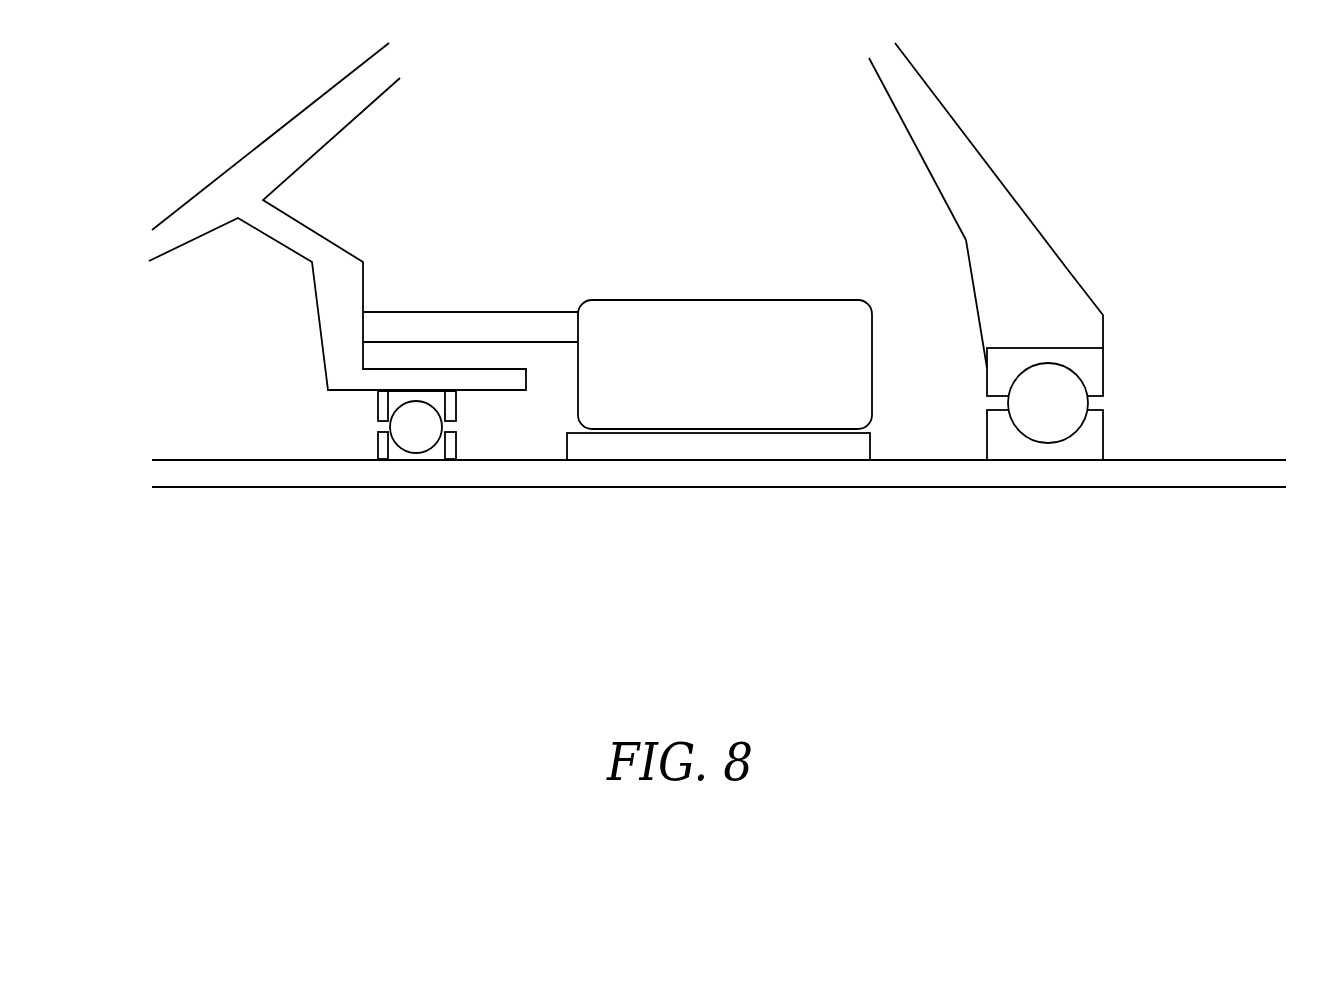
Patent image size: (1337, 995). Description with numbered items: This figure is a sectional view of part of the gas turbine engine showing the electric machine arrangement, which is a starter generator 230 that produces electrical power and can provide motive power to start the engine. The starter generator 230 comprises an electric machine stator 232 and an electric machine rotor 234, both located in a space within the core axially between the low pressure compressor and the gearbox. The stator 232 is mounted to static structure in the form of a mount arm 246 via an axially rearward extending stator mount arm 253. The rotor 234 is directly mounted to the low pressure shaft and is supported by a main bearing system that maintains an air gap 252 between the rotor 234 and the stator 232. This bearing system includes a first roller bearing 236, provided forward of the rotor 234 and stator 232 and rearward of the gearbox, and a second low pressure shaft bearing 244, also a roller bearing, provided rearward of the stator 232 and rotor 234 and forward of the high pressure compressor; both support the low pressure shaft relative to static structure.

The starter generator 230 is at (666, 272).
The electric machine stator 232 is at (780, 300).
The electric machine rotor 234 is at (807, 448).
The roller bearing 236 is at (412, 462).
The second low pressure shaft bearing 244 is at (1132, 415).
The mount arm 246 is at (317, 310).
The air gap 252 is at (662, 430).
The stator mount arm 253 is at (457, 312).